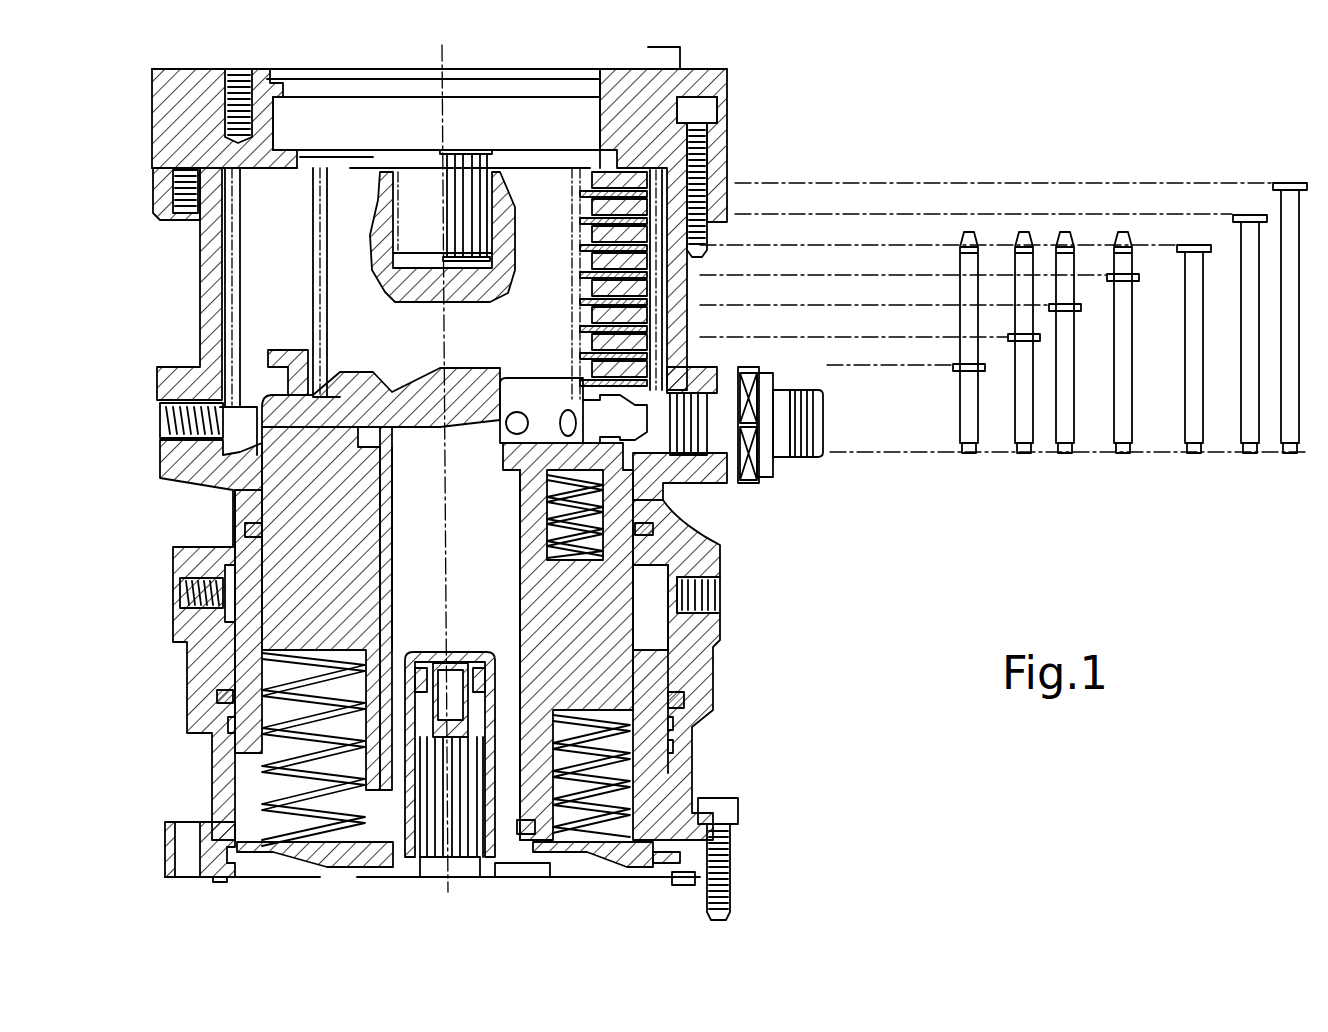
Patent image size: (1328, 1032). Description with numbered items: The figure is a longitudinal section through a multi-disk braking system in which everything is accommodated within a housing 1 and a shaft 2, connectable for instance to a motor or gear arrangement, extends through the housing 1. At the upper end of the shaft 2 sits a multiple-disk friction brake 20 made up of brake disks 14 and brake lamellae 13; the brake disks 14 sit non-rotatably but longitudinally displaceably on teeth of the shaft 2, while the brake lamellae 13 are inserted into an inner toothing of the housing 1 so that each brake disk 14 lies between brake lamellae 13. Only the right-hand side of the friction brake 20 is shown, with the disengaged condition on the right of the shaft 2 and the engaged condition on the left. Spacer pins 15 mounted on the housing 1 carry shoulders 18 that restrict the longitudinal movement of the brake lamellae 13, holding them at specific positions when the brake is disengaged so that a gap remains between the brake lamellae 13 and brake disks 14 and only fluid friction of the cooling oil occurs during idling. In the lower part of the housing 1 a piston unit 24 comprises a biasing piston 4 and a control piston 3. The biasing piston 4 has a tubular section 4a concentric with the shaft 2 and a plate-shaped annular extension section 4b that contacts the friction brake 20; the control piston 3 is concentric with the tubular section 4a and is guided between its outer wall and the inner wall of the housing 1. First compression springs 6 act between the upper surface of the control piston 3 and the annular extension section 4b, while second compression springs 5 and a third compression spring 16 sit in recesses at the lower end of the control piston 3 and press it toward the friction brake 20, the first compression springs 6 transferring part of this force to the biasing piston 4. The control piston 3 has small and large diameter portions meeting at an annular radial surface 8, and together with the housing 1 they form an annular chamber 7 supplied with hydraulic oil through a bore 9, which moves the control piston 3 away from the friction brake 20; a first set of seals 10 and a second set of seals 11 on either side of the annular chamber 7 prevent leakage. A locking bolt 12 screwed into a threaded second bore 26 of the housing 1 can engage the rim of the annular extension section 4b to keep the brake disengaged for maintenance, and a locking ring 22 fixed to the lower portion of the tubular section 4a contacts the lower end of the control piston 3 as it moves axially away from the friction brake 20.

The housing 1 is at (210, 543).
The shaft 2 is at (337, 253).
The control piston 3 is at (648, 672).
The biasing piston 4 is at (390, 600).
The tubular section 4a is at (515, 610).
The annular extension section 4b is at (682, 486).
The second compression springs 5 is at (620, 780).
The first compression springs 6 is at (553, 482).
The annular chamber 7 is at (658, 612).
The annular radial surface 8 is at (650, 650).
The bore 9 is at (706, 592).
The first set of seals 10 is at (682, 698).
The second set of seals 11 is at (653, 530).
The locking bolt 12 is at (770, 432).
The brake lamellae 13 is at (667, 160).
The brake disks 14 is at (668, 312).
The spacer pins 15 is at (975, 437).
The third compression spring 16 is at (267, 798).
The shoulders 18 is at (953, 367).
The multiple-disk friction brake 20 is at (600, 167).
The locking ring 22 is at (524, 852).
The piston unit 24 is at (406, 494).
The second bore 26 is at (737, 407).